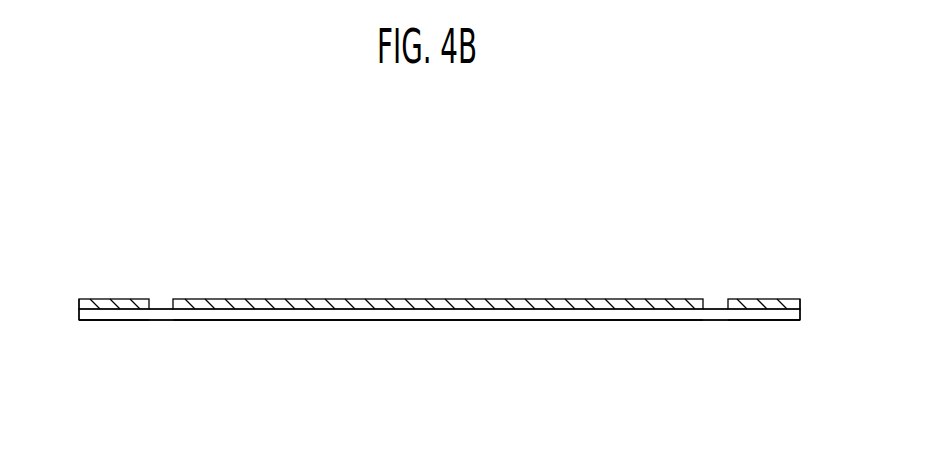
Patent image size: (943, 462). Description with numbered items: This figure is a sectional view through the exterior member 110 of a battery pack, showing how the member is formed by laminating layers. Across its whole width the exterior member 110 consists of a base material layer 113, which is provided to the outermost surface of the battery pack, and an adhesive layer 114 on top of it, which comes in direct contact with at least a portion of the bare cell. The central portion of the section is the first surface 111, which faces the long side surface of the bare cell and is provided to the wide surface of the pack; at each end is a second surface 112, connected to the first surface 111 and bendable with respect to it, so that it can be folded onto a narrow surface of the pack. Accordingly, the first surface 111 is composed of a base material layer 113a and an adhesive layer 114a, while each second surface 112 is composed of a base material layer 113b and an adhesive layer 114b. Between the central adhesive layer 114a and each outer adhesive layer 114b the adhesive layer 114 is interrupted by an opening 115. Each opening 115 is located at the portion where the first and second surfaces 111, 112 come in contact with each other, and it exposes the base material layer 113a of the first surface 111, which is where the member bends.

The exterior member 110 is at (634, 140).
The first surface 111 is at (485, 330).
The second surface 112 is at (84, 332).
The base material layer 113 is at (770, 388).
The base material layer 113a is at (383, 315).
The base material layer 113b is at (119, 313).
The adhesive layer 114 is at (770, 203).
The adhesive layer 114a is at (375, 299).
The adhesive layer 114b is at (120, 305).
The opening 115 is at (165, 304).